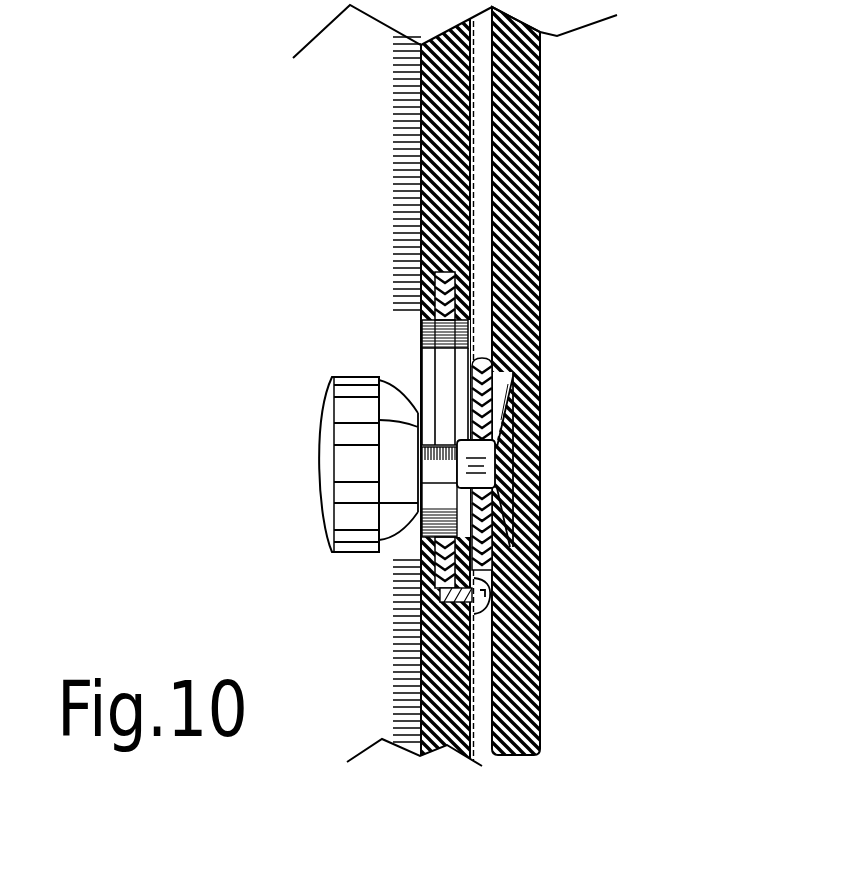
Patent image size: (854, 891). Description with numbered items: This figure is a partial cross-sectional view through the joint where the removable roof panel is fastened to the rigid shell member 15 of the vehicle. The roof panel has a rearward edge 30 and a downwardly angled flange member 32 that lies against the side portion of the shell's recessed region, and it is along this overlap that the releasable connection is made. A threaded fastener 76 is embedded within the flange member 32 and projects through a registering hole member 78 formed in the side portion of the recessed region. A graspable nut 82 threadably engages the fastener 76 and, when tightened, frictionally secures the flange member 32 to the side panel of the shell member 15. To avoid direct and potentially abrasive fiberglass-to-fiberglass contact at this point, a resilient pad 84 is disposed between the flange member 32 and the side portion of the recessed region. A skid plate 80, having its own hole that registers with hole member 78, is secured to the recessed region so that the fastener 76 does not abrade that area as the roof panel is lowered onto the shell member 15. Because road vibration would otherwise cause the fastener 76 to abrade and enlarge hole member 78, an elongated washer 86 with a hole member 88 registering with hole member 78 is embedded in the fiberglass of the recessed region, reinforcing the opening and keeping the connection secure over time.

The rigid shell member 15 is at (386, 389).
The rearward edge 30 is at (546, 165).
The flange member 32 is at (530, 331).
The threaded fastener 76 is at (520, 438).
The hole member 78 is at (430, 330).
The skid plate 80 is at (476, 100).
The graspable nut 82 is at (326, 495).
The resilient pad 84 is at (518, 397).
The elongated washer 86 is at (433, 285).
The hole member 88 is at (443, 383).